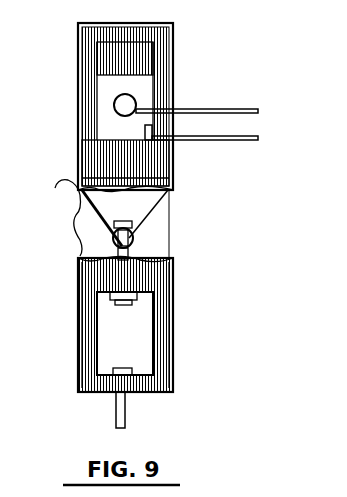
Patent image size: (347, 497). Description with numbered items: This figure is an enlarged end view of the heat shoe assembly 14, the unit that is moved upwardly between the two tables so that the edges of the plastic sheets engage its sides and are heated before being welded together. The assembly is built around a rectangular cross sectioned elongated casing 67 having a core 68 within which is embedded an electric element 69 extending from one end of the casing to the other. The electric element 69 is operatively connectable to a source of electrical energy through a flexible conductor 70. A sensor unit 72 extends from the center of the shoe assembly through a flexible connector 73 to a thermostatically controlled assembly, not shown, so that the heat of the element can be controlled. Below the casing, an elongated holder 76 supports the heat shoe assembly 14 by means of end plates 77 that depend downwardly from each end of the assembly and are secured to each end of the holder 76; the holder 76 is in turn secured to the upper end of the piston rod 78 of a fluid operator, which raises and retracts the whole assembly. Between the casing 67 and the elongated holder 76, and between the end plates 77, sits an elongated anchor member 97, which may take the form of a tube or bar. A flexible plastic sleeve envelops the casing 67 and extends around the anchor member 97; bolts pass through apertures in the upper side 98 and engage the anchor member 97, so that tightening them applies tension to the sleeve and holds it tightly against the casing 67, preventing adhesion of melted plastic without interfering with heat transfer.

The heat shoe assembly 14 is at (268, 177).
The casing 67 is at (173, 45).
The core 68 is at (173, 88).
The electric element 69 is at (115, 98).
The flexible conductor 70 is at (238, 110).
The sensor unit 72 is at (146, 134).
The flexible connector 73 is at (241, 136).
The elongated holder 76 is at (166, 300).
The end plates 77 is at (55, 213).
The piston rod 78 is at (127, 415).
The anchor member 97 is at (145, 228).
The upper side 98 is at (150, 260).